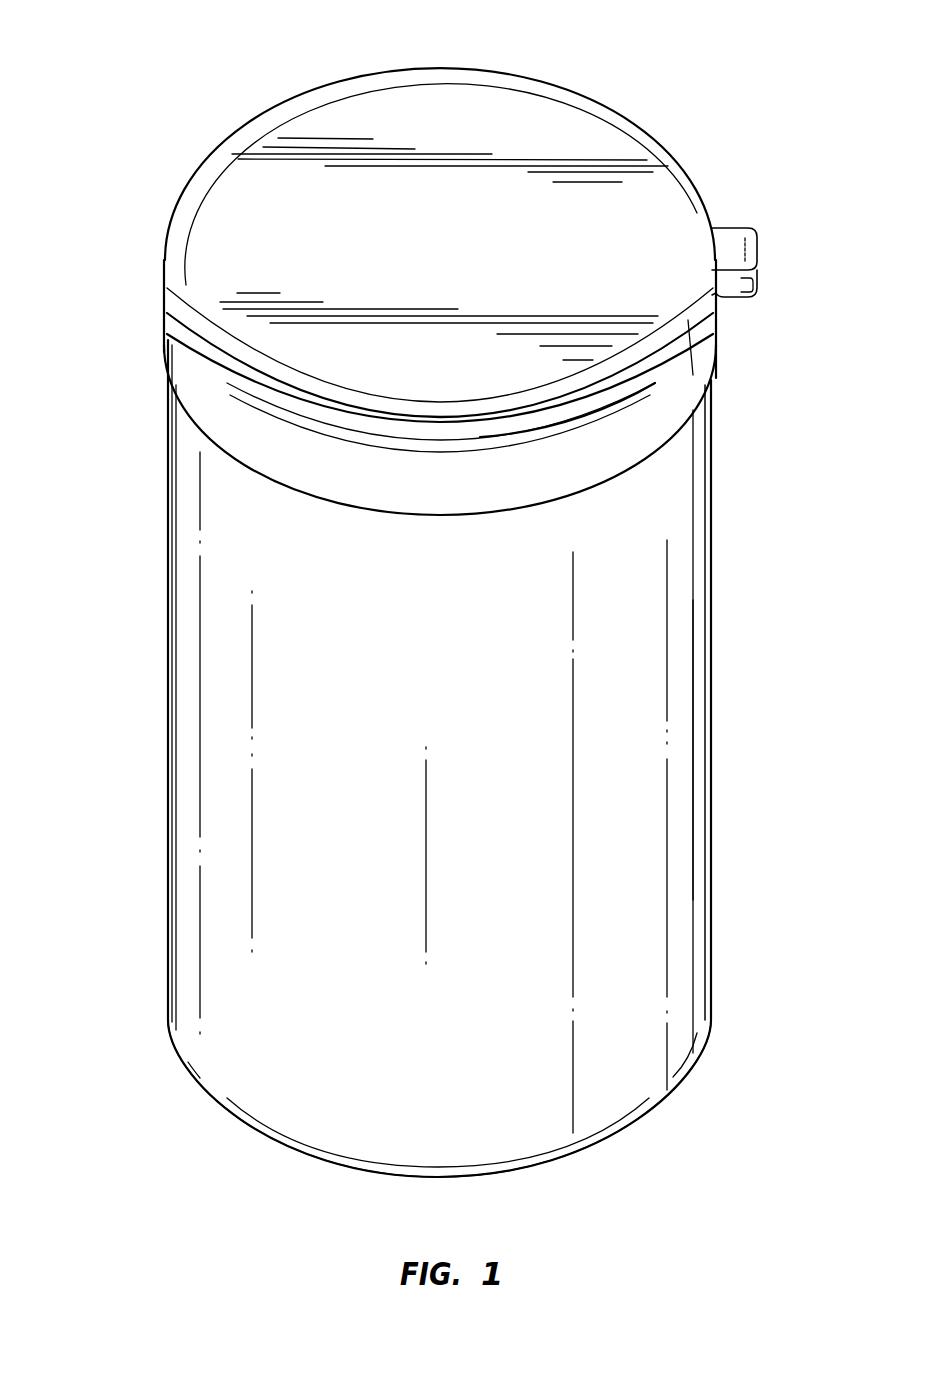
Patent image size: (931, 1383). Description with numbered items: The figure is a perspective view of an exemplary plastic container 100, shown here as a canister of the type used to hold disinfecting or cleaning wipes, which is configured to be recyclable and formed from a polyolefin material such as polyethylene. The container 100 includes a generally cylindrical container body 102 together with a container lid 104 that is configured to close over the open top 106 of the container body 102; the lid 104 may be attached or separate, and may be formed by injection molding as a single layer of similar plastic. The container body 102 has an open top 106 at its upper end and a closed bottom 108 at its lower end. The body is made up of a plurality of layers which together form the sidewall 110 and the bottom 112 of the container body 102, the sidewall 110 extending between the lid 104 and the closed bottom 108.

The plastic container 100 is at (167, 110).
The container body 102 is at (715, 492).
The container lid 104 is at (688, 320).
The open top 106 is at (155, 381).
The closed bottom 108 is at (159, 1011).
The sidewall 110 is at (693, 767).
The bottom 112 is at (507, 1172).